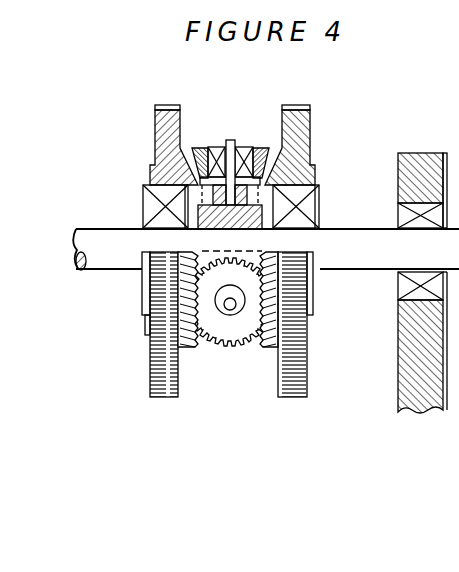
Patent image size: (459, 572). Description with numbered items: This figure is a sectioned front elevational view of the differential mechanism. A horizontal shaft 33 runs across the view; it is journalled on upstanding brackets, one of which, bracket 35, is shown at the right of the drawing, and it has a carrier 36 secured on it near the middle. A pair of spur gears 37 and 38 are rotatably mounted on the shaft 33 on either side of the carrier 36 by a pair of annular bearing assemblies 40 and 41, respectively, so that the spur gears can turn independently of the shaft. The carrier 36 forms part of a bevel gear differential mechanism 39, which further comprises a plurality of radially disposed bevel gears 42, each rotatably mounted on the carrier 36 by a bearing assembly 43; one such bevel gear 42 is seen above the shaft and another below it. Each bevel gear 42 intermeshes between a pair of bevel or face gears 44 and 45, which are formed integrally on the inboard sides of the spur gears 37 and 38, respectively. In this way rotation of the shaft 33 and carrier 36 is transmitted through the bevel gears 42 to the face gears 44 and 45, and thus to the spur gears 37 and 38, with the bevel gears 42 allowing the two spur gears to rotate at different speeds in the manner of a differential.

The shaft 33 is at (110, 262).
The upstanding bracket 35 is at (425, 160).
The carrier 36 is at (245, 198).
The spur gear 37 is at (155, 131).
The spur gear 38 is at (310, 125).
The bevel gear differential mechanism 39 is at (246, 345).
The annular bearing assembly 40 is at (142, 205).
The annular bearing assembly 41 is at (321, 208).
The bevel gear 42 is at (203, 148).
The bearing assembly 43 is at (248, 142).
The bevel or face gear 44 is at (186, 333).
The bevel or face gear 45 is at (307, 355).